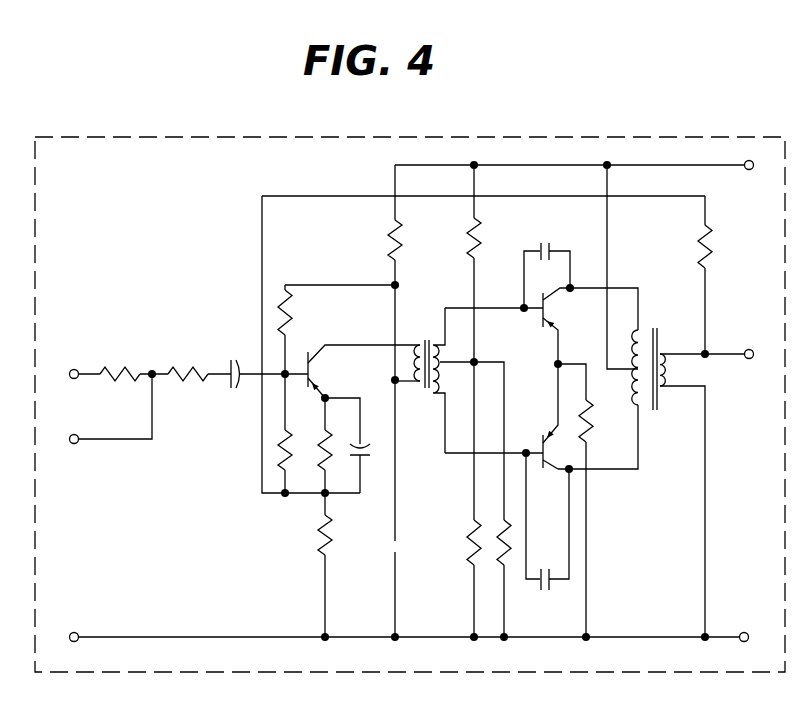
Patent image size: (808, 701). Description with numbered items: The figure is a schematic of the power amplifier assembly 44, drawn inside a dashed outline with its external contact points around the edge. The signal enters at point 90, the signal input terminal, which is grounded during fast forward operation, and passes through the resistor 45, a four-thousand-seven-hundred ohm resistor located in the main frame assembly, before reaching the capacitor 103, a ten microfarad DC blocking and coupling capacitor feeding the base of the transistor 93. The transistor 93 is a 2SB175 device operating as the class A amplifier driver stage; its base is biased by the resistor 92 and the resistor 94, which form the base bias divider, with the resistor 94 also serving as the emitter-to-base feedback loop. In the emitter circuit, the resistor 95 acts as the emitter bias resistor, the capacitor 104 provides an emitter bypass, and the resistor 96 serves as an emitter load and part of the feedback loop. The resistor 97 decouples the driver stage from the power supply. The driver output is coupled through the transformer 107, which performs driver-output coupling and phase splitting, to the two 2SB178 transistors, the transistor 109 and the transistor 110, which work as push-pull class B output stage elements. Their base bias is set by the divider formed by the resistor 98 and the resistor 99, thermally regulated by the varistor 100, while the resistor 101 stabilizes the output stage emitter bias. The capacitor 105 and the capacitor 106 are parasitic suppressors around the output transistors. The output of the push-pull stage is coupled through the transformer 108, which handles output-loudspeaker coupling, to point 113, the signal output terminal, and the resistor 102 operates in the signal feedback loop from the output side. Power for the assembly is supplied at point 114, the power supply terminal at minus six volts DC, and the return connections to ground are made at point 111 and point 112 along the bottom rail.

The power amplifier assembly 44 is at (575, 117).
The resistor 45 is at (130, 368).
The point 90 is at (76, 444).
The resistor 92 is at (292, 306).
The transistor 93 is at (312, 372).
The resistor 94 is at (282, 449).
The resistor 95 is at (322, 470).
The resistor 96 is at (332, 541).
The resistor 97 is at (400, 235).
The resistor 98 is at (478, 237).
The resistor 99 is at (472, 540).
The varistor 100 is at (508, 555).
The resistor 101 is at (590, 424).
The resistor 102 is at (712, 240).
The capacitor 103 is at (231, 389).
The capacitor 104 is at (358, 448).
The capacitor 105 is at (566, 215).
The capacitor 106 is at (548, 570).
The transformer 107 is at (427, 340).
The transformer 108 is at (650, 330).
The transistor 109 is at (545, 438).
The transistor 110 is at (546, 308).
The point 111 is at (78, 633).
The point 112 is at (745, 633).
The point 113 is at (752, 352).
The point 114 is at (752, 162).